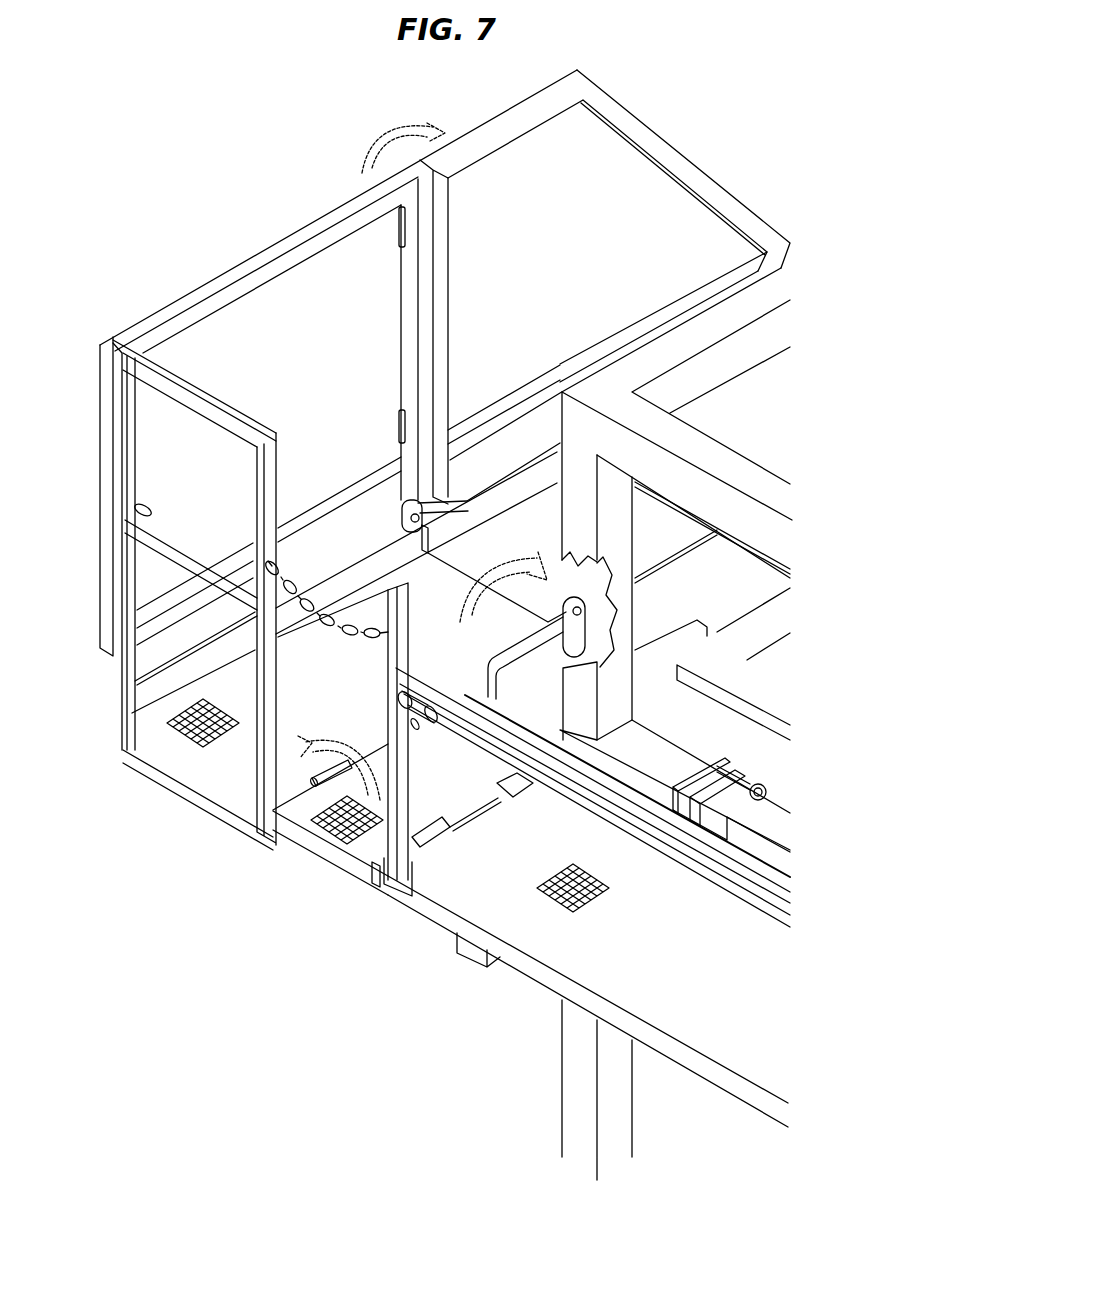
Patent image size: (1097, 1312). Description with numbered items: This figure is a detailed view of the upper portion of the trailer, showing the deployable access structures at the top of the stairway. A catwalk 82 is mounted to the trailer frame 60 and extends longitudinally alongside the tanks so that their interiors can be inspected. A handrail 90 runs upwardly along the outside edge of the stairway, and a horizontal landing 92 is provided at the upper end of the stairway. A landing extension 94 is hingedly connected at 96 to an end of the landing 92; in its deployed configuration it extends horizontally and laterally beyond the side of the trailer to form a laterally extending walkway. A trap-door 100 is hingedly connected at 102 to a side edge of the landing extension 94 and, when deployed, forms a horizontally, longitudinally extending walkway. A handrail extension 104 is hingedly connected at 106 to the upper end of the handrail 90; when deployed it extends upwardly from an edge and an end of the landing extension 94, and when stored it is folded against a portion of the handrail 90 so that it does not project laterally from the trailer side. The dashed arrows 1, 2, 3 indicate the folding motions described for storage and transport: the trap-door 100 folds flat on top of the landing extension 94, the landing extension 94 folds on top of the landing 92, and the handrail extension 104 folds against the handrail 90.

The handrail extension 104 is at (228, 275).
The hinge connection of handrail extension 106 is at (398, 228).
The handrail 90 is at (683, 155).
The frame 60 is at (740, 463).
The hinge connection of landing extension 96 is at (416, 510).
The landing 92 is at (548, 540).
The landing extension 94 is at (330, 684).
The trap-door 100 is at (472, 787).
The catwalk 82 is at (684, 960).
The hinge connection of trap-door 102 is at (333, 787).
The first rotation direction 1 is at (339, 753).
The second rotation direction 2 is at (403, 135).
The third rotation direction 3 is at (503, 584).